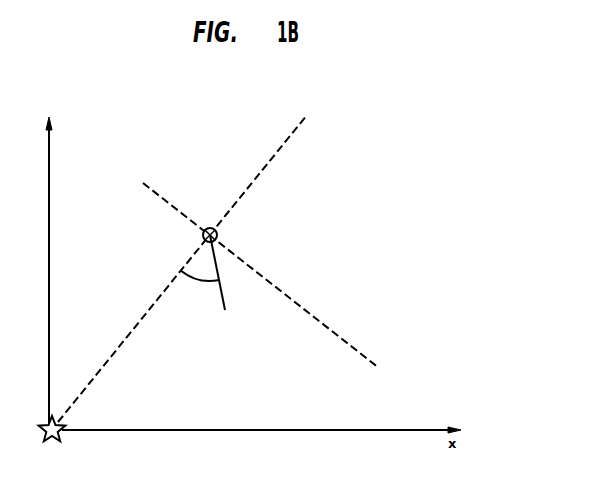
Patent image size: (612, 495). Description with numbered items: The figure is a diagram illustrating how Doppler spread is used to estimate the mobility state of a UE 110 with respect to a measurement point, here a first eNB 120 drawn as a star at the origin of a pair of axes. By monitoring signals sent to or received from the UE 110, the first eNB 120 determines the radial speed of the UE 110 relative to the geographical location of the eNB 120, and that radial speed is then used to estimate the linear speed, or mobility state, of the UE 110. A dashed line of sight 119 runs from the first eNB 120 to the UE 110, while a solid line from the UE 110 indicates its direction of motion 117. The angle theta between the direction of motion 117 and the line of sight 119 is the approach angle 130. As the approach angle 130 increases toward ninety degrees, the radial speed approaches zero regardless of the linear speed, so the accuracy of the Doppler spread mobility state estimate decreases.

The UE 110 is at (201, 212).
The first eNB 120 is at (94, 423).
The line of sight 119 is at (132, 333).
The direction of motion 117 is at (225, 311).
The approach angle 130 is at (188, 303).